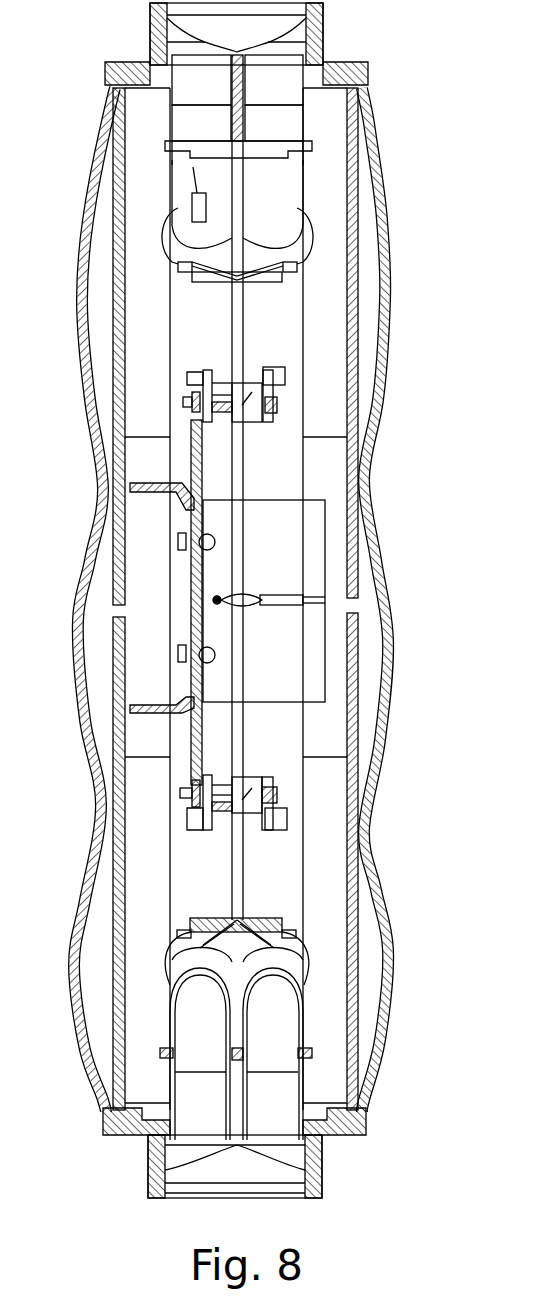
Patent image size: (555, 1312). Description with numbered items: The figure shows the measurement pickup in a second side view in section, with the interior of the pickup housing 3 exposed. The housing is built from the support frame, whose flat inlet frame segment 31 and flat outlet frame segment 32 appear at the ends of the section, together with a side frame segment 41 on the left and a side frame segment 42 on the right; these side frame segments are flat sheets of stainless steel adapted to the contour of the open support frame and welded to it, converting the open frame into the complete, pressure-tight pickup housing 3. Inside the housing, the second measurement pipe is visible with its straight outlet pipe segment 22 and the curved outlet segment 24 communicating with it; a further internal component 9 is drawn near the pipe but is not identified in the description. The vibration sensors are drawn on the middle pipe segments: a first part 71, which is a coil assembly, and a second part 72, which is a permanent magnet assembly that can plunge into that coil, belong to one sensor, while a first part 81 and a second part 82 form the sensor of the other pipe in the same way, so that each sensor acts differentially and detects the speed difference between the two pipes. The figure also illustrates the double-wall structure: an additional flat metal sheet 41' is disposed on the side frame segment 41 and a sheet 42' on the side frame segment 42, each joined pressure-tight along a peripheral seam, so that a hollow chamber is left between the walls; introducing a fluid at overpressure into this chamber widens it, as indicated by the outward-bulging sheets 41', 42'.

The straight outlet pipe segment 22 is at (185, 120).
The curved outlet segment 24 is at (183, 178).
The valve member 9 is at (183, 212).
The second part of the vibration sensor 82 is at (195, 376).
The first part of the vibration sensor 81 is at (305, 400).
The pickup housing 3 is at (95, 509).
The side frame segment 41 is at (365, 599).
The side frame segment 42 is at (93, 599).
The second part of the vibration sensor 72 is at (185, 812).
The first part of the vibration sensor 71 is at (285, 800).
The additional flat metal sheet 41' is at (395, 971).
The additional flat metal sheet 42' is at (55, 958).
The outlet frame segment 32 is at (100, 1100).
The inlet frame segment 31 is at (365, 1125).